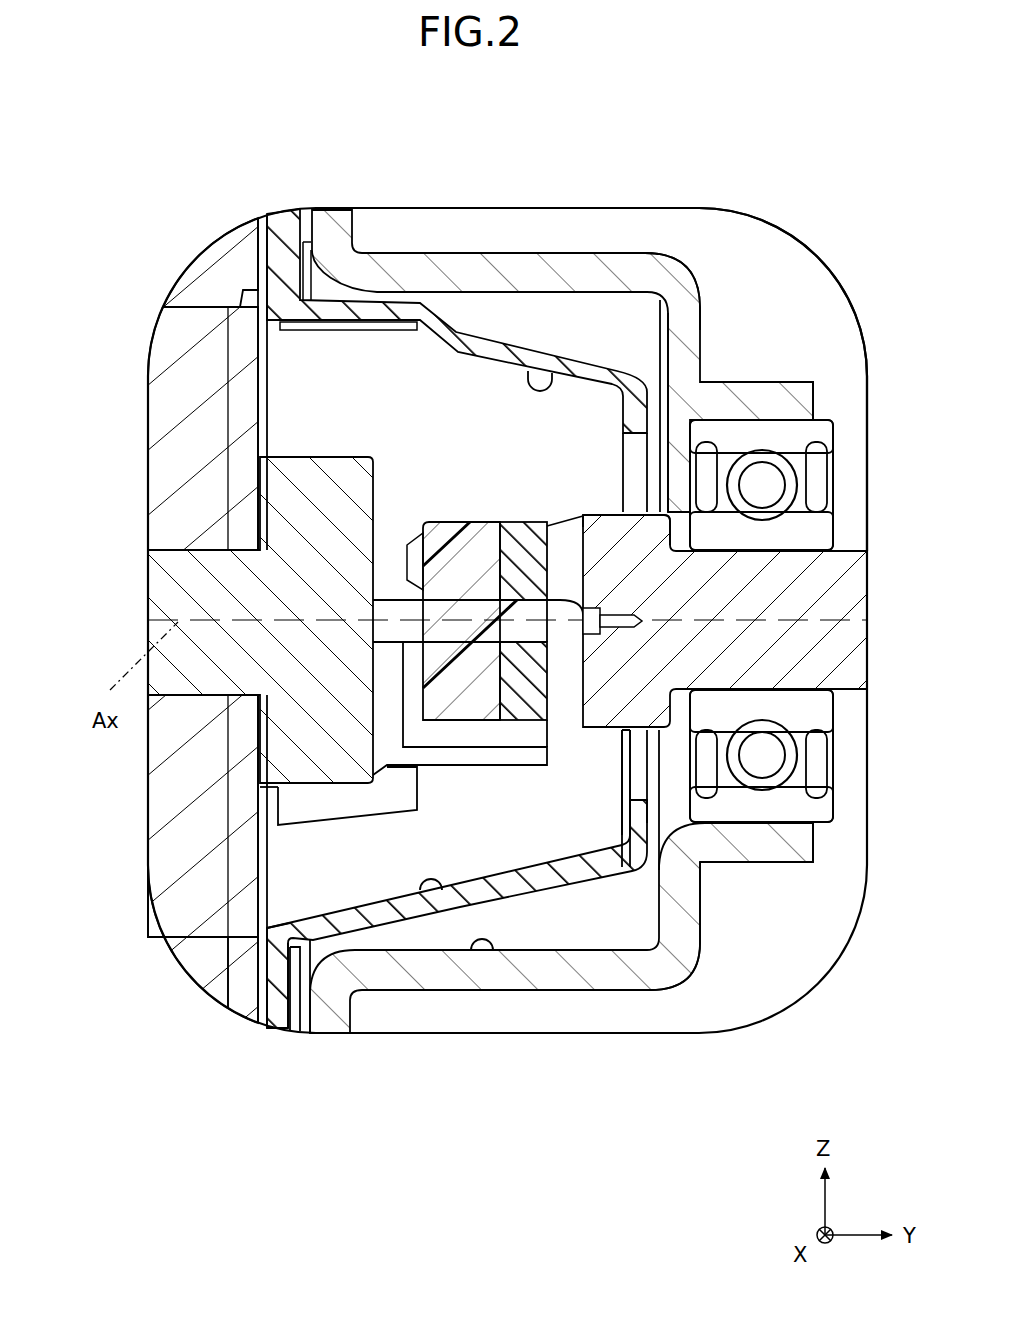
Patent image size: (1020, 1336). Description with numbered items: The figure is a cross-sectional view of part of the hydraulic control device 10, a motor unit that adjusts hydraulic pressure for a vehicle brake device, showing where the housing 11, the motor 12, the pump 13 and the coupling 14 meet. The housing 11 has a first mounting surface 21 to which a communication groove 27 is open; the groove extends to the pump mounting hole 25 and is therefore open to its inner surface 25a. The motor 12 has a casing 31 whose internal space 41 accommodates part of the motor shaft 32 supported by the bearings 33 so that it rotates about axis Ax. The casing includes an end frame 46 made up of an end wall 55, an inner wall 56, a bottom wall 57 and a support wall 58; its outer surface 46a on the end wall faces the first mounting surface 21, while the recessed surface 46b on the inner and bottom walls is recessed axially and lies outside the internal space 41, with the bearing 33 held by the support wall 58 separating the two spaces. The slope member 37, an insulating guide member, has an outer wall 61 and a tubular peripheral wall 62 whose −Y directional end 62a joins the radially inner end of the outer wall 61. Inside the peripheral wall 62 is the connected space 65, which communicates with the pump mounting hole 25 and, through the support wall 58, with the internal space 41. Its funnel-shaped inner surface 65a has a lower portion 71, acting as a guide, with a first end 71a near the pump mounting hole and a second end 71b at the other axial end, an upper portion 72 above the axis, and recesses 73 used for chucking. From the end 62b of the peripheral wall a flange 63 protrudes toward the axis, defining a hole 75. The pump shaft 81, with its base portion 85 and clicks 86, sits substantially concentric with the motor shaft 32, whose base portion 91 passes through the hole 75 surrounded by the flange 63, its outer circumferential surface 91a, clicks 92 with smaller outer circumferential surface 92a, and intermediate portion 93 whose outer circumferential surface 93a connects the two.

The hydraulic control device 10 is at (130, 90).
The housing 11 is at (222, 262).
The motor 12 is at (795, 232).
The pump 13 is at (180, 352).
The coupling 14 is at (470, 523).
The first mounting surface 21 is at (262, 232).
The pump mounting hole 25 is at (200, 937).
The inner surface 25a is at (203, 972).
The communication groove 27 is at (242, 990).
The casing 31 is at (693, 978).
The motor shaft 32 is at (845, 650).
The bearing 33 is at (823, 425).
The slope member 37 is at (546, 892).
The internal space 41 is at (805, 318).
The end frame 46 is at (597, 268).
The outer surface 46a is at (293, 228).
The recessed surface 46b is at (433, 900).
The end wall 55 is at (353, 215).
The inner wall 56 is at (450, 262).
The bottom wall 57 is at (700, 325).
The support wall 58 is at (815, 400).
The outer wall 61 is at (275, 1010).
The peripheral wall 62 is at (484, 962).
The −Y directional end 62a is at (297, 1000).
The end 62b is at (633, 850).
The flange 63 is at (705, 862).
The connected space 65 is at (292, 412).
The inner surface 65a is at (417, 875).
The lower portion 71 is at (338, 796).
The first end 71a is at (268, 925).
The second end 71b is at (625, 822).
The upper portion 72 is at (547, 522).
The recess 73 is at (345, 325).
The hole 75 is at (637, 822).
The pump shaft 81 is at (160, 606).
The base portion 85 is at (270, 500).
The click 86 is at (470, 742).
The base portion 91 is at (662, 308).
The outer circumferential surface 91a is at (648, 770).
The click 92 is at (578, 519).
The outer circumferential surface 92a is at (626, 530).
The intermediate portion 93 is at (604, 518).
The outer circumferential surface 93a is at (606, 521).